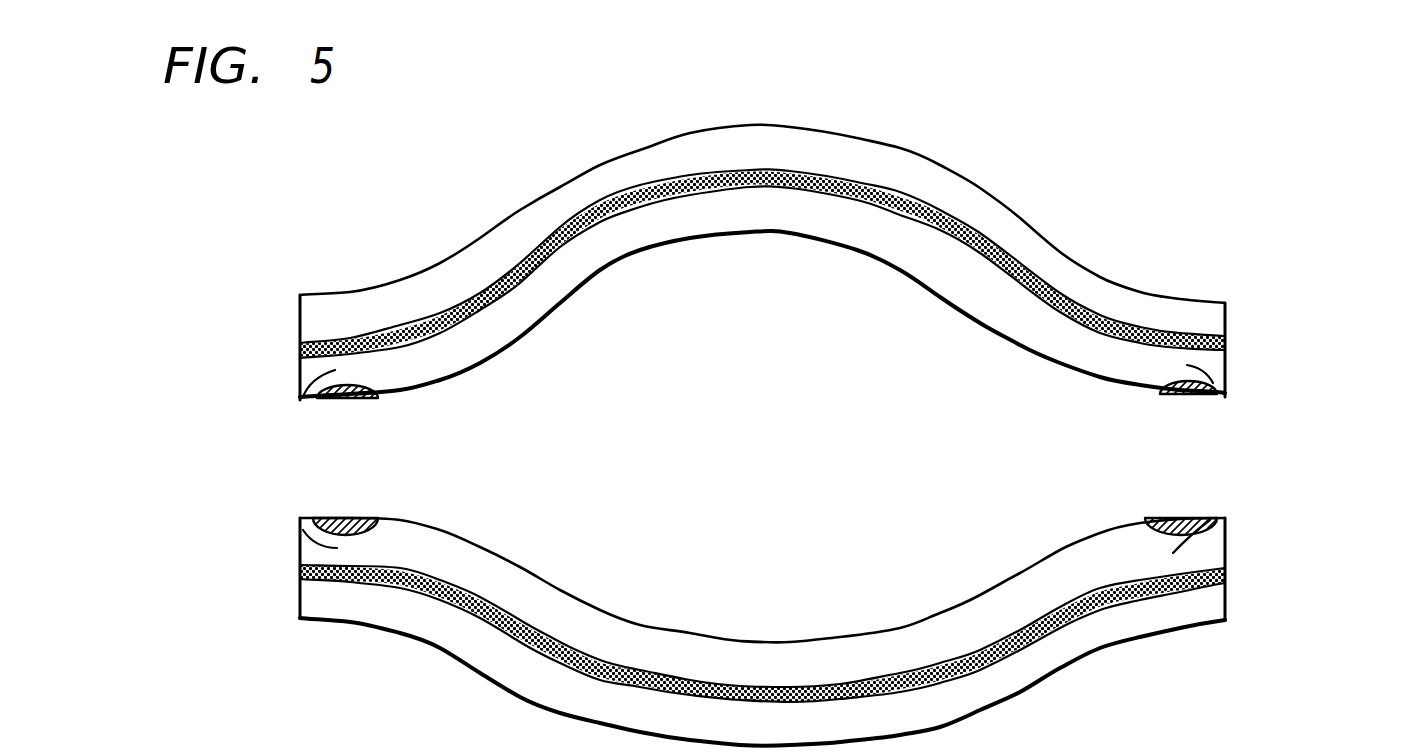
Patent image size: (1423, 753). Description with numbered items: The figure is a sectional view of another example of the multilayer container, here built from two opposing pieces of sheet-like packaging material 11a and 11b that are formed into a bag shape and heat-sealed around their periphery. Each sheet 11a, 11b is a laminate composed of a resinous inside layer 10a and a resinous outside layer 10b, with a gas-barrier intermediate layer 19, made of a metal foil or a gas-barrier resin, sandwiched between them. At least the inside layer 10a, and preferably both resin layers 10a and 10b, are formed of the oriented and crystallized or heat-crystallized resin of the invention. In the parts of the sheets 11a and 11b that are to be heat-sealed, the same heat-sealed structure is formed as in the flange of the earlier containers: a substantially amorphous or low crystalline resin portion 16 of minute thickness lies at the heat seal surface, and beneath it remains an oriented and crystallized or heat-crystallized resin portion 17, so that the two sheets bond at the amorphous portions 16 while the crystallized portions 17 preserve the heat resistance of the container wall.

The inside resin layer 10a is at (1240, 318).
The outside resin layer 10b is at (1240, 540).
The sheet-like packaging material 11a is at (861, 262).
The sheet-like packaging material 11b is at (861, 630).
The substantially amorphous or low crystalline resin portion 16 is at (350, 518).
The oriented and crystallized or heat-crystallized resin portion 17 is at (302, 535).
The gas-barrier intermediate layer 19 is at (1226, 342).